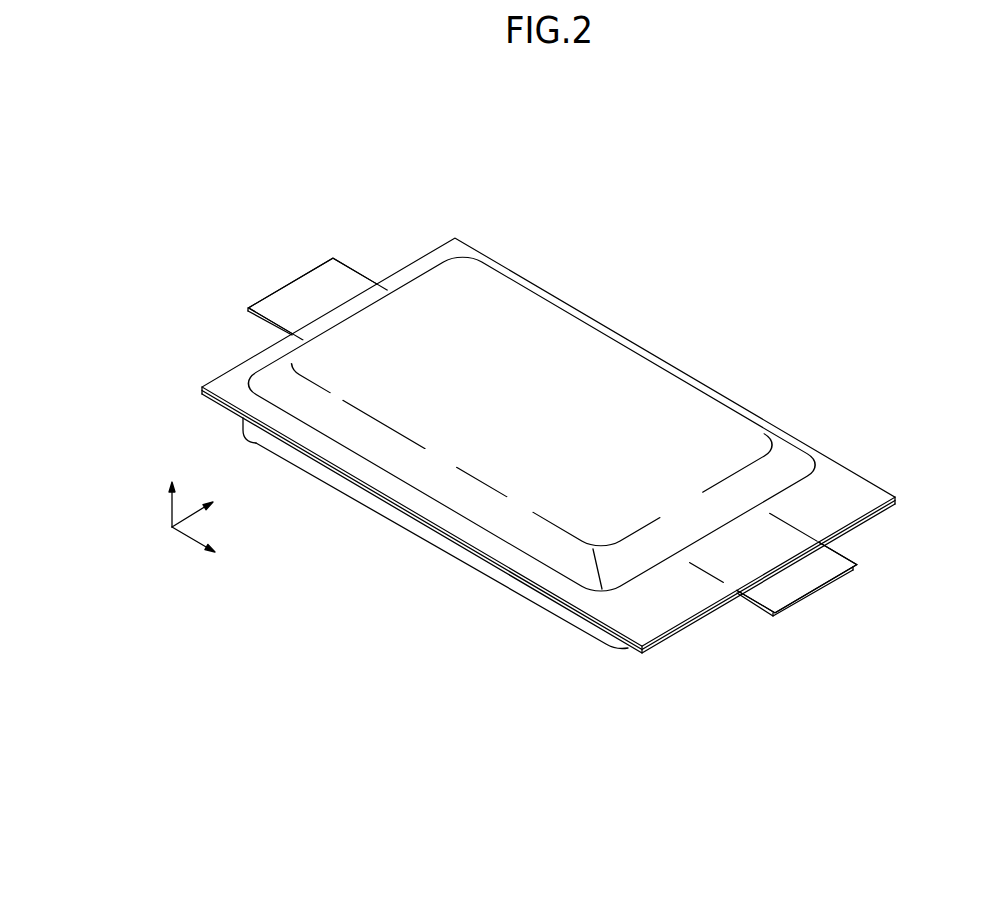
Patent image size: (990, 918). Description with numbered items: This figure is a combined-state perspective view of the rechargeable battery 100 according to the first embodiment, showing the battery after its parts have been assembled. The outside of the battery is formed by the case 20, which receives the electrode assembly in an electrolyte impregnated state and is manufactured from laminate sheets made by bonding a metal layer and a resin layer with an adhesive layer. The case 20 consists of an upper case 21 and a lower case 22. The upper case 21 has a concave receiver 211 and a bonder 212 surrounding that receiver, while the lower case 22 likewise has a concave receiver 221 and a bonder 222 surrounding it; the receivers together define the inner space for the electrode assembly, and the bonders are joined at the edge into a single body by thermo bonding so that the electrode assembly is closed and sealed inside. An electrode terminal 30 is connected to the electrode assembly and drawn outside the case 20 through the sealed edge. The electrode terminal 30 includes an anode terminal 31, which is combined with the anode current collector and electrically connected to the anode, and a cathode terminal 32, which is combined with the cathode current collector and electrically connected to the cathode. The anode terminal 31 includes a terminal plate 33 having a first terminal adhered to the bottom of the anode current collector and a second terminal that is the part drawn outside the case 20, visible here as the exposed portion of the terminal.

The rechargeable battery 100 is at (520, 132).
The case 20 is at (381, 530).
The upper case 21 is at (906, 391).
The concave receiver 211 is at (730, 425).
The bonder 212 is at (823, 465).
The lower case 22 is at (474, 651).
The concave receiver 221 is at (477, 560).
The bonder 222 is at (522, 580).
The electrode terminal 30 is at (567, 430).
The anode terminal 31 is at (253, 285).
The cathode terminal 32 is at (868, 567).
The terminal plate 33 is at (307, 282).